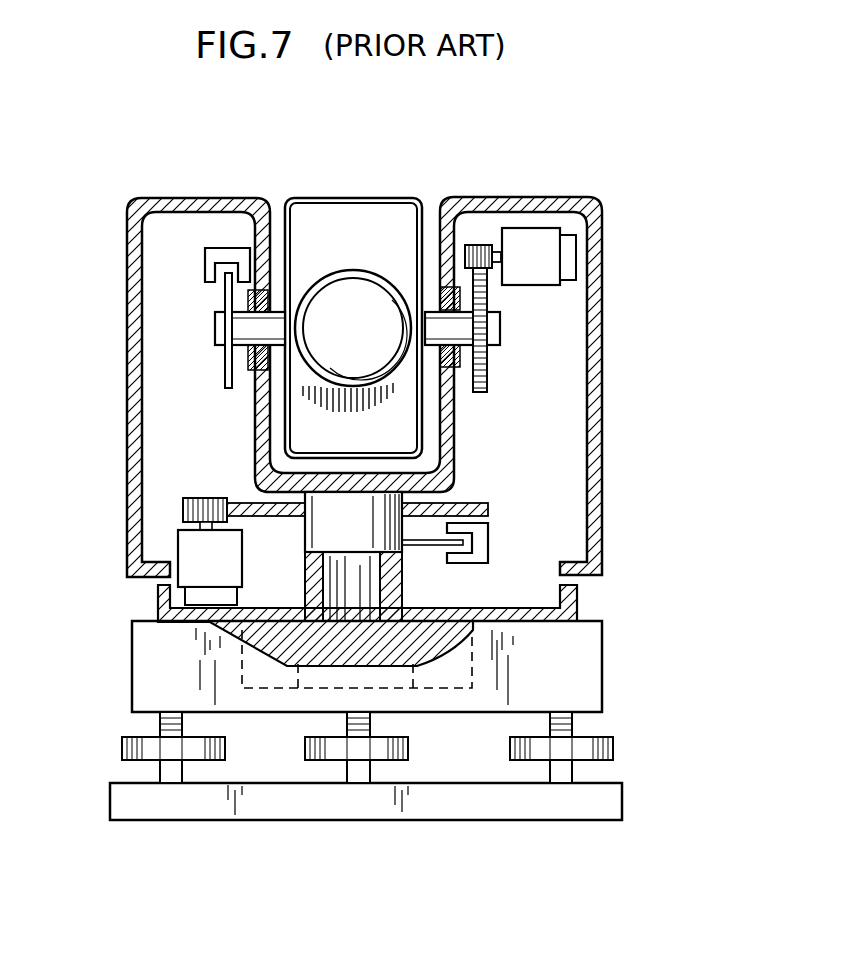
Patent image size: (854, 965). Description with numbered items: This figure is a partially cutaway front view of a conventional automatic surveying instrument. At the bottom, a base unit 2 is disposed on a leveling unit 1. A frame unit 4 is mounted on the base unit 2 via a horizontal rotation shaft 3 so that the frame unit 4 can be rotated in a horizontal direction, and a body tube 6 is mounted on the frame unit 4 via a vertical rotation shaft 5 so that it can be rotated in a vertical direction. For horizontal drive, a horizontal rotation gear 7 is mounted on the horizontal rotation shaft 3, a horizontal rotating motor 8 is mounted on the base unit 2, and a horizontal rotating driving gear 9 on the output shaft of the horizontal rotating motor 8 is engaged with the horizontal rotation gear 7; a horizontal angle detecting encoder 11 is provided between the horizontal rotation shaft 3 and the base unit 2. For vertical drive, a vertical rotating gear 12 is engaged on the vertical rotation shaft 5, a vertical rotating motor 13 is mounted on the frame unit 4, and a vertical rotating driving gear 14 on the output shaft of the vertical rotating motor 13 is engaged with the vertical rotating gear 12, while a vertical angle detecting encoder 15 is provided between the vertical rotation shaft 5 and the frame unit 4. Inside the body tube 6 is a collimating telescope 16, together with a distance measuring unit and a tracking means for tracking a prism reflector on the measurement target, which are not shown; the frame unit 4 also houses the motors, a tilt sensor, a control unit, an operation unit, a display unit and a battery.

The leveling unit 1 is at (626, 745).
The base unit 2 is at (603, 658).
The horizontal rotation shaft 3 is at (375, 627).
The frame unit 4 is at (600, 466).
The vertical rotation shaft 5 is at (212, 327).
The body tube 6 is at (315, 198).
The horizontal rotation gear 7 is at (470, 502).
The horizontal rotating motor 8 is at (184, 546).
The horizontal rotating driving gear 9 is at (205, 496).
The horizontal angle detecting encoder 11 is at (494, 545).
The vertical rotating gear 12 is at (478, 392).
The vertical rotating motor 13 is at (545, 285).
The vertical rotating driving gear 14 is at (478, 245).
The vertical angle detecting encoder 15 is at (191, 242).
The collimating telescope 16 is at (368, 272).